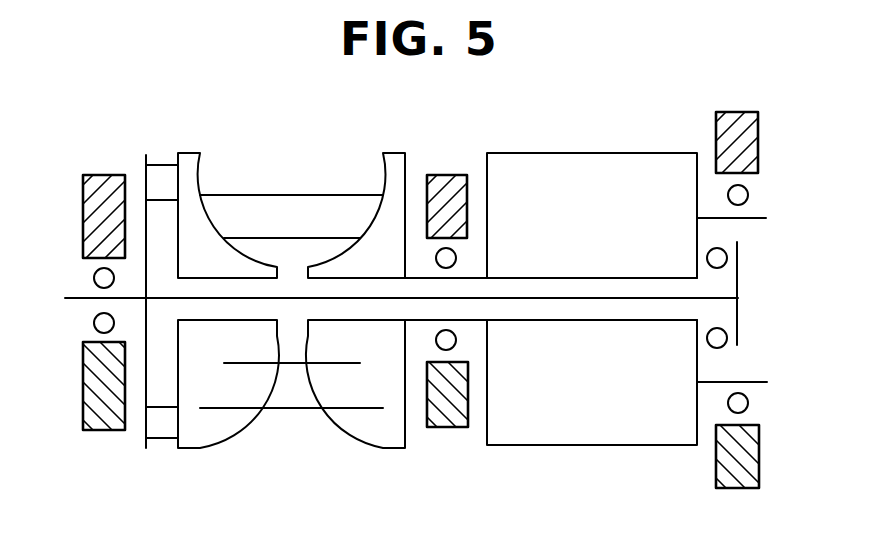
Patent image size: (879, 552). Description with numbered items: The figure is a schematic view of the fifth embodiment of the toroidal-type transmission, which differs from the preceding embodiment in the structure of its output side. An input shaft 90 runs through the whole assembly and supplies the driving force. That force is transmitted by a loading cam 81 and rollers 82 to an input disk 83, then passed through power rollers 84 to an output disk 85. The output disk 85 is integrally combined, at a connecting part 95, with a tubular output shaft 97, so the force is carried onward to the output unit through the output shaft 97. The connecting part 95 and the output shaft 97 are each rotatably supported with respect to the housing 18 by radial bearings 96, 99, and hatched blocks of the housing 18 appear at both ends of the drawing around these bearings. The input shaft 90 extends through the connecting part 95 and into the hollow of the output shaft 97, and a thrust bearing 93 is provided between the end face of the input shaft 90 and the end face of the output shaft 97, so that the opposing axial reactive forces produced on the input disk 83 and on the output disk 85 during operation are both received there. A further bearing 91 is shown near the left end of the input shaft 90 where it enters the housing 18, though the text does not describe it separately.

The housing 18 is at (110, 185).
The loading cam 81 is at (145, 427).
The rollers 82 is at (167, 427).
The input disk 83 is at (190, 435).
The power rollers 84 is at (303, 203).
The output disk 85 is at (398, 437).
The input shaft 90 is at (73, 300).
The bearing 91 is at (94, 277).
The thrust bearing 93 is at (716, 256).
The connecting part 95 is at (467, 273).
The radial bearing 96 is at (444, 345).
The tubular output shaft 97 is at (573, 393).
The radial bearing 99 is at (748, 190).